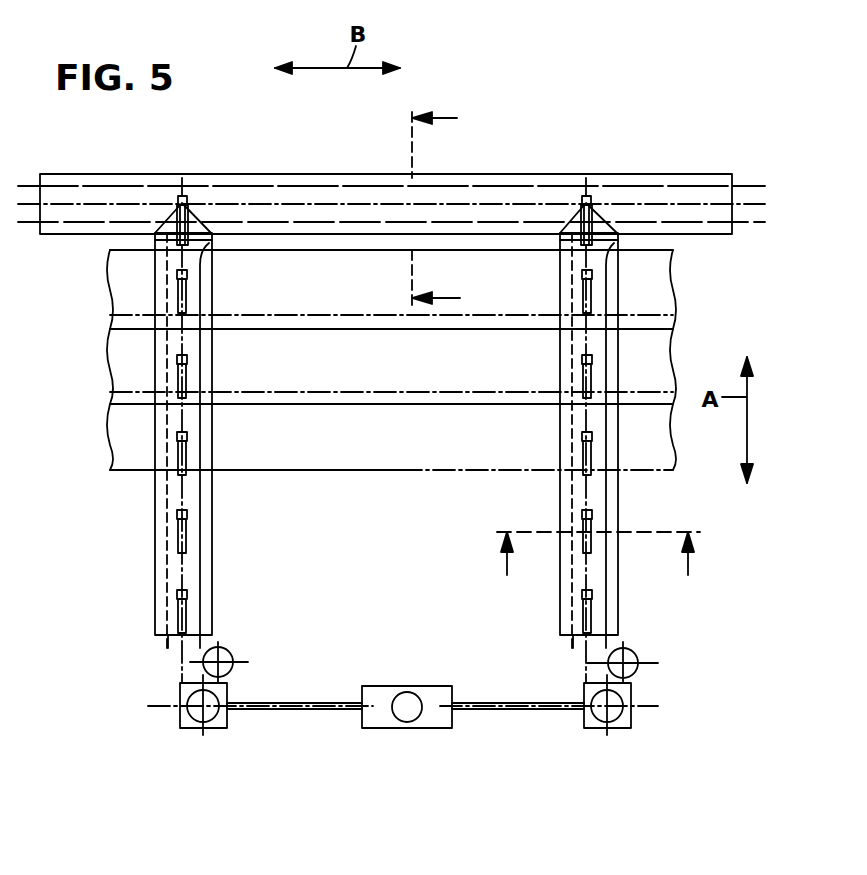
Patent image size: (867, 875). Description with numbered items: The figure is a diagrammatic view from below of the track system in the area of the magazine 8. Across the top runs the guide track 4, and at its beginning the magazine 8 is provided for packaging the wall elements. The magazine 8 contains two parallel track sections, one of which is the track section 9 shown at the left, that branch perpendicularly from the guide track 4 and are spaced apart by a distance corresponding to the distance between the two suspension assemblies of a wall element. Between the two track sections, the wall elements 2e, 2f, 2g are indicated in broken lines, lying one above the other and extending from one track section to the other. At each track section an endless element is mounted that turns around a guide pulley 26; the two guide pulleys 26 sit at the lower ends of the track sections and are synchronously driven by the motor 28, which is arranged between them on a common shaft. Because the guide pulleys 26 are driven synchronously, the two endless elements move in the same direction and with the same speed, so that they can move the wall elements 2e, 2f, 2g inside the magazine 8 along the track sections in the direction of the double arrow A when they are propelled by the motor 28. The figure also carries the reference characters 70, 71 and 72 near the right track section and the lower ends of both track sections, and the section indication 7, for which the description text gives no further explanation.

The guide track 4 is at (520, 175).
The wall element 2e is at (648, 289).
The wall element 2f is at (648, 361).
The wall element 2g is at (648, 448).
The track section 9 is at (155, 509).
The right vertical guide member 70 is at (620, 605).
The left pulley 71 is at (186, 667).
The right pulley 72 is at (587, 674).
The guide pulley 26 is at (197, 722).
The motor 28 is at (402, 729).
The section line 7- 7 is at (598, 556).
The magazine 8 is at (352, 541).